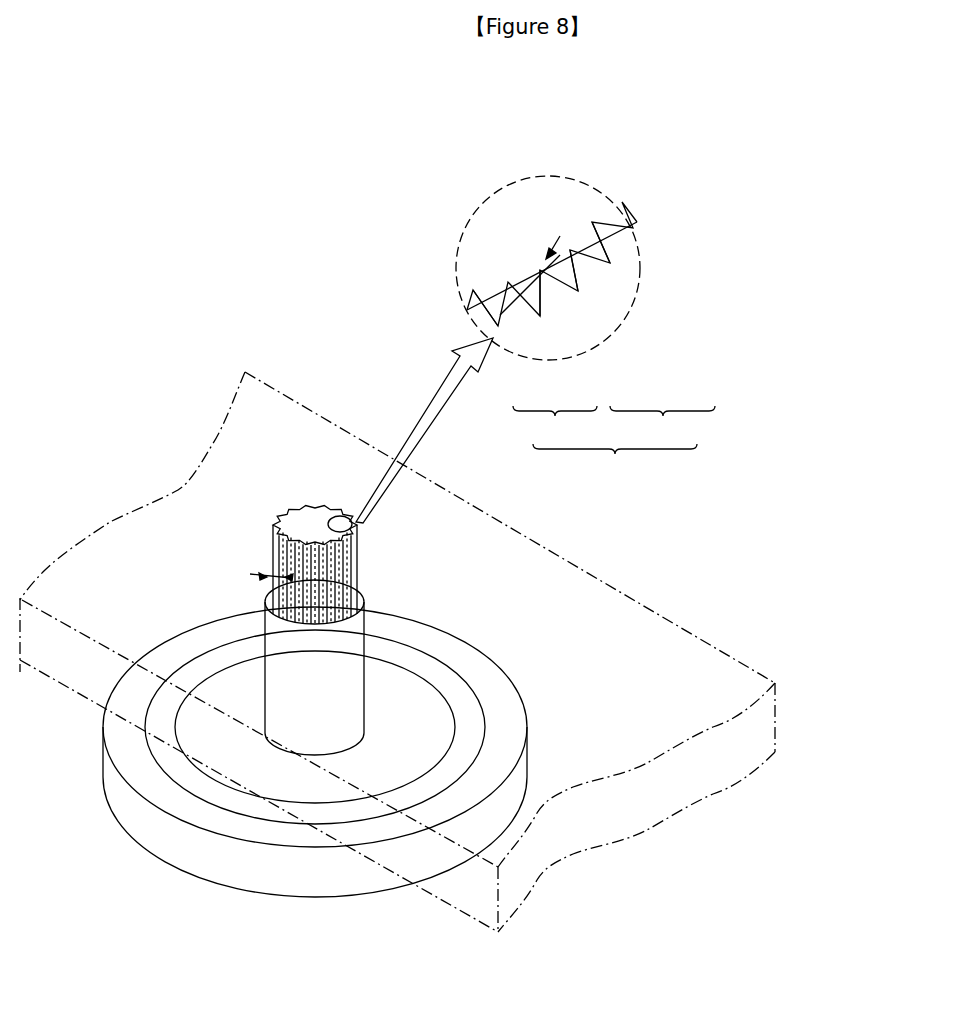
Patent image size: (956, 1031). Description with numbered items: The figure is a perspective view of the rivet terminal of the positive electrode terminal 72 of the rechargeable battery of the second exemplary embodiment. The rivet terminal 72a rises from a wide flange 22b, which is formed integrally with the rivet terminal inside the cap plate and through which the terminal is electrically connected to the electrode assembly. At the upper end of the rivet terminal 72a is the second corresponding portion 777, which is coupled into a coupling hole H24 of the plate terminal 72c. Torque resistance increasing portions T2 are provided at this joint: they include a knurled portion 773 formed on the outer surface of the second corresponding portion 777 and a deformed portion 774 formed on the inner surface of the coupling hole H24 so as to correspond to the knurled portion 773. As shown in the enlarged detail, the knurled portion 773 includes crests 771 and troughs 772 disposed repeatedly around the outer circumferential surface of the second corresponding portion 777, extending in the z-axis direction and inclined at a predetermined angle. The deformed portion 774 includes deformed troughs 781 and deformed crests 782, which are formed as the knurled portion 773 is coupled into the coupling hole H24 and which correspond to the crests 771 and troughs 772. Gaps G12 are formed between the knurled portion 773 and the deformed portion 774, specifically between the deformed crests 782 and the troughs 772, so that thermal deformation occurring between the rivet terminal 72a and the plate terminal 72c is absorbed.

The positive electrode terminal 72 is at (307, 372).
The plate terminal 72c is at (110, 522).
The rivet terminal 72a is at (370, 700).
The flange 22b is at (290, 875).
The second corresponding portion 777 is at (356, 565).
The coupling hole H24 is at (610, 228).
The gaps G12 is at (535, 272).
The deformed troughs 781 is at (498, 320).
The deformed crests 782 is at (550, 307).
The crests 771 is at (577, 283).
The troughs 772 is at (635, 300).
The deformed portion 774 is at (555, 426).
The knurled portion 773 is at (662, 426).
The torque resistance increasing portions T2 is at (615, 465).